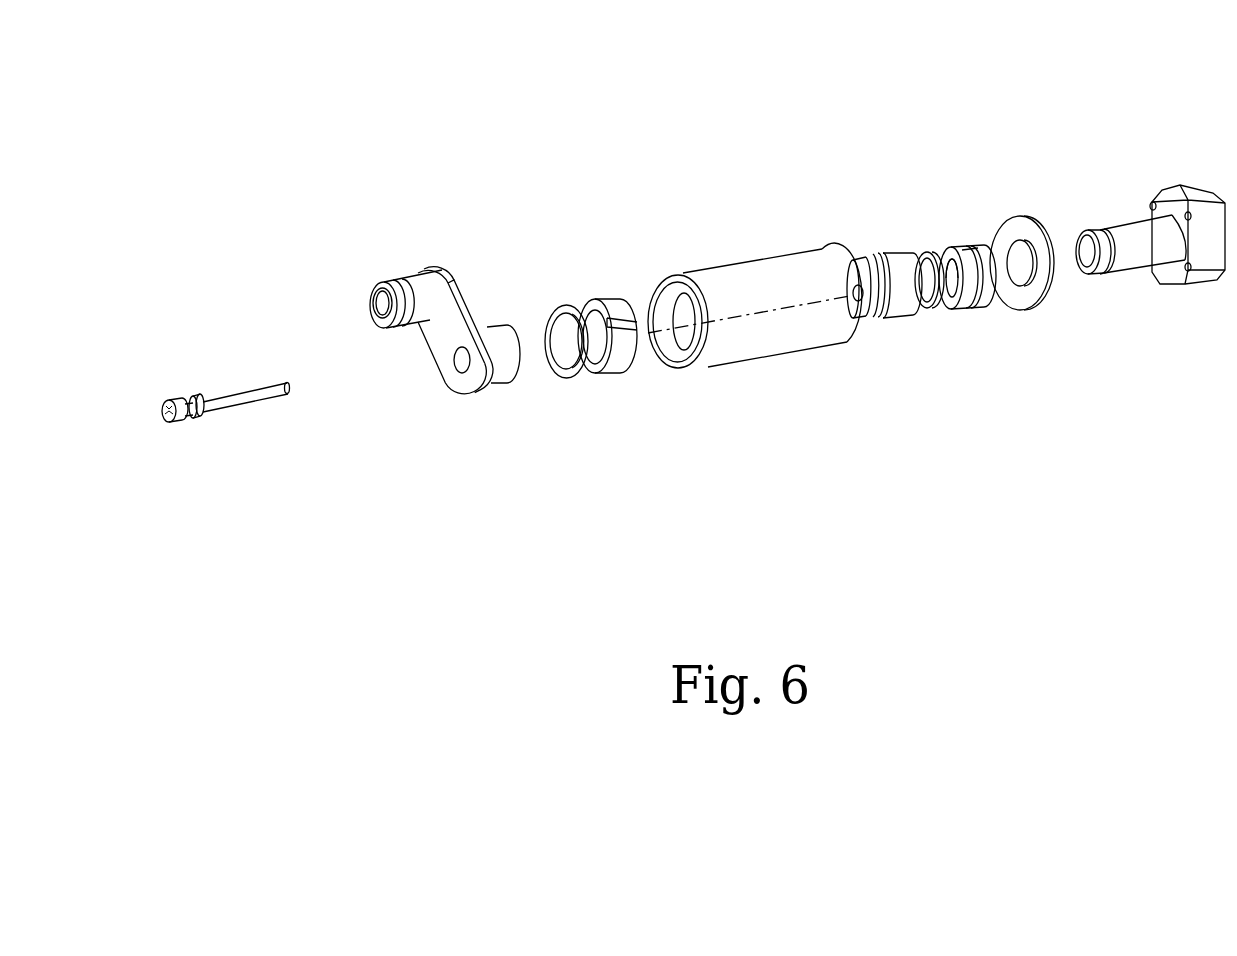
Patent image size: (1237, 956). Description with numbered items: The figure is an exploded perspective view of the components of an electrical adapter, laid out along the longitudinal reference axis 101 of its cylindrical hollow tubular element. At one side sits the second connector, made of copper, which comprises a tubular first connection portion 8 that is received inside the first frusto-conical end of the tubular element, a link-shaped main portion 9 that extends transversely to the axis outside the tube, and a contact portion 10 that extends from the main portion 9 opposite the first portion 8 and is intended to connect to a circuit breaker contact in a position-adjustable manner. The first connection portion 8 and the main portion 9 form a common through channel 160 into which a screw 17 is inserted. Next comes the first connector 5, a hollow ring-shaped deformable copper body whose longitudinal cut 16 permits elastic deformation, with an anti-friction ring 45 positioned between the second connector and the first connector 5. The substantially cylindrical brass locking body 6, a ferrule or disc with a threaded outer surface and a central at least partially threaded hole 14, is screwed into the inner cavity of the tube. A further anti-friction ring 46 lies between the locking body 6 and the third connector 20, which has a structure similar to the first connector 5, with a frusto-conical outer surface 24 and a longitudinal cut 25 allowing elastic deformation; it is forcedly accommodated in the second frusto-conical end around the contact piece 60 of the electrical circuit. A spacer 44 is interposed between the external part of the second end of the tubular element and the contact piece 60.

The first connector 5 is at (625, 372).
The locking body 6 is at (881, 245).
The first connection portion 8 is at (500, 326).
The main portion 9 is at (439, 336).
The contact portion 10 is at (392, 280).
The hole 14 is at (862, 302).
The longitudinal cut 16 is at (626, 318).
The screw 17 is at (245, 408).
The third connector 20 is at (974, 312).
The frusto-conical outer surface 24 is at (978, 249).
The longitudinal cut 25 is at (951, 257).
The spacer 44 is at (1050, 295).
The anti-friction ring 45 is at (558, 307).
The anti-friction ring 46 is at (933, 310).
The contact piece 60 is at (1137, 232).
The longitudinal reference axis 101 is at (770, 312).
The through channel 160 is at (461, 362).